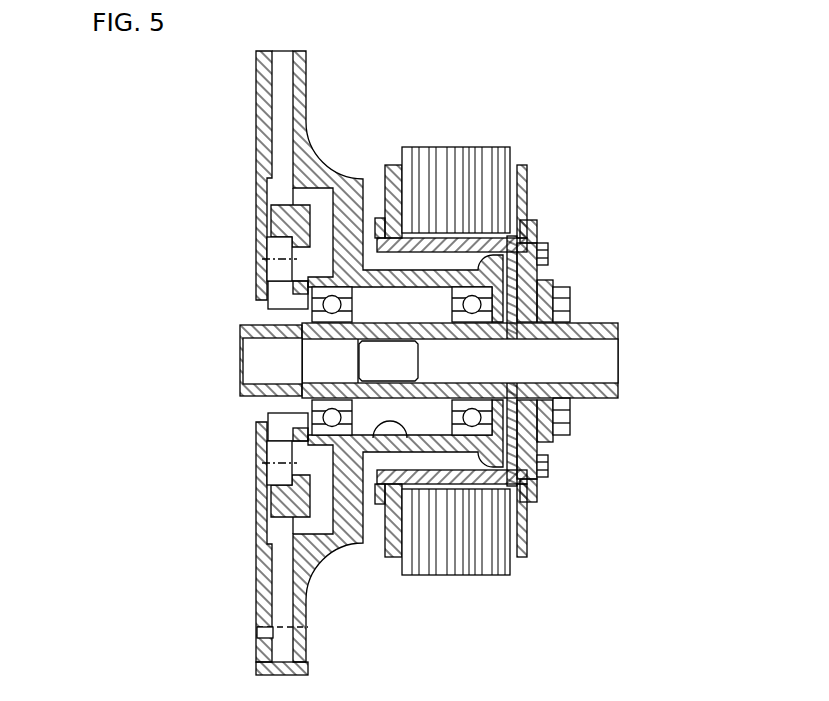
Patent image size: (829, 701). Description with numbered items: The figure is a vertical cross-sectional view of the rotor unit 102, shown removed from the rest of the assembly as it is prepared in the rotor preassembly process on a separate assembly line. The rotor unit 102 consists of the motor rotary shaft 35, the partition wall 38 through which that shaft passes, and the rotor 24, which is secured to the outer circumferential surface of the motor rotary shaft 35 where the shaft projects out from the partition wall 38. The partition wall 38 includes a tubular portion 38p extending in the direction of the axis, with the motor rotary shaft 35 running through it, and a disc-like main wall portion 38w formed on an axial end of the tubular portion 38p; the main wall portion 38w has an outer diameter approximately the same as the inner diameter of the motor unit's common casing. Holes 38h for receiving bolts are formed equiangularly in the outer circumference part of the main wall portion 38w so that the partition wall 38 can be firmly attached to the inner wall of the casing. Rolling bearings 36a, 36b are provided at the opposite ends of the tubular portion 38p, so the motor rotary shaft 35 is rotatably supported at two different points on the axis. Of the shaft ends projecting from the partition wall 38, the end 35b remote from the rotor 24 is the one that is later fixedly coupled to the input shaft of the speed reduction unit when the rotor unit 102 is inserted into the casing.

The rotor unit 102 is at (162, 146).
The rotor 24 is at (537, 232).
The motor rotary shaft 35 is at (421, 371).
The end of motor rotary shaft 35b is at (244, 393).
The rolling bearing 36a is at (485, 428).
The rolling bearing 36b is at (296, 430).
The partition wall 38 is at (354, 363).
The main wall portion 38w is at (298, 80).
The tubular portion 38p is at (455, 275).
The hole 38h is at (378, 437).